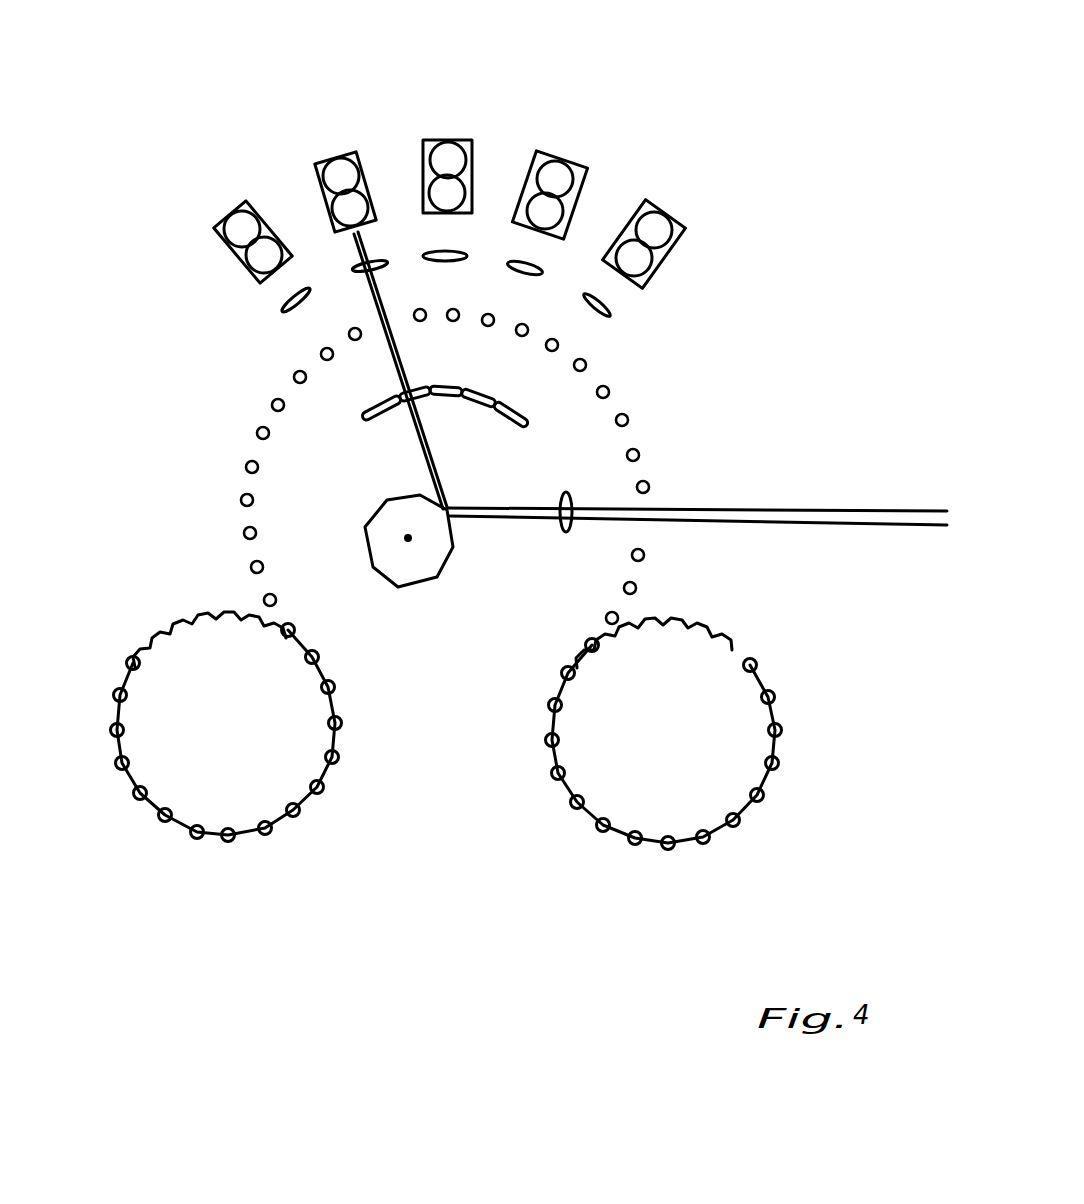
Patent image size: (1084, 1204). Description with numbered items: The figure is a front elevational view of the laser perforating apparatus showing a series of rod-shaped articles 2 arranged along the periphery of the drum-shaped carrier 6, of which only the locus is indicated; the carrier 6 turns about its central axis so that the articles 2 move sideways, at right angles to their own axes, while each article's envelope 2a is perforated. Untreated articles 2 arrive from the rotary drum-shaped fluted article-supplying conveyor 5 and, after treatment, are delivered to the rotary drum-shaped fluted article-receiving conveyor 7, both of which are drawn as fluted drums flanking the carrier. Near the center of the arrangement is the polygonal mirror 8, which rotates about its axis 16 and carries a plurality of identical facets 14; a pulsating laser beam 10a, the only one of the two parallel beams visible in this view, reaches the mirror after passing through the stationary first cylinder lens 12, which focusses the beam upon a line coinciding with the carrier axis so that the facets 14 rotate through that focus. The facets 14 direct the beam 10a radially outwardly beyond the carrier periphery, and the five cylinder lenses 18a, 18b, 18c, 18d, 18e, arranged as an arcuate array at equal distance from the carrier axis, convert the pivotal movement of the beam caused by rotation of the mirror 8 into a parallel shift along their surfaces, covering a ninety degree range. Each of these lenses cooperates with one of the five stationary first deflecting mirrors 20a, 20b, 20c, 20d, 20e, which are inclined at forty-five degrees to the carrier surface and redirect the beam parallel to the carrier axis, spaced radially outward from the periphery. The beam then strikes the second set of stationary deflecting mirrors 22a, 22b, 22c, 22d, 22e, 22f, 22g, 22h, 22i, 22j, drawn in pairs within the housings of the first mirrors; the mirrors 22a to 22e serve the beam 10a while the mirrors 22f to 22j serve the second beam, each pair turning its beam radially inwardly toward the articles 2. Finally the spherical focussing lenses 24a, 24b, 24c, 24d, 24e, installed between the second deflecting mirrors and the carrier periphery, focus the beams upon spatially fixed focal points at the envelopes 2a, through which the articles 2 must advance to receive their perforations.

The rod-shaped article 2 is at (447, 612).
The envelope 2a is at (669, 490).
The article-supplying conveyor 5 is at (778, 724).
The drum-shaped carrier 6 is at (201, 544).
The article-receiving conveyor 7 is at (132, 780).
The polygonal mirror 8 is at (435, 580).
The laser beam 10a is at (398, 352).
The first cylinder lens 12 is at (567, 492).
The facet 14 is at (447, 580).
The axis 16 is at (423, 552).
The optical component 18a is at (365, 410).
The optical component 18b is at (400, 402).
The optical component 18c is at (446, 396).
The optical component 18d is at (481, 400).
The optical component 18e is at (522, 418).
The first deflecting mirror 20a is at (202, 206).
The first deflecting mirror 20b is at (326, 137).
The first deflecting mirror 20c is at (446, 111).
The first deflecting mirror 20d is at (585, 139).
The first deflecting mirror 20e is at (710, 172).
The second deflecting mirror 22a is at (255, 258).
The second deflecting mirror 22b is at (340, 210).
The second deflecting mirror 22c is at (430, 185).
The second deflecting mirror 22d is at (538, 195).
The second deflecting mirror 22e is at (628, 240).
The second deflecting mirror 22f is at (237, 226).
The second deflecting mirror 22g is at (340, 167).
The second deflecting mirror 22h is at (455, 158).
The second deflecting mirror 22i is at (565, 178).
The second deflecting mirror 22j is at (660, 215).
The spherical focussing lens 24a is at (282, 305).
The spherical focussing lens 24b is at (352, 276).
The spherical focussing lens 24c is at (453, 250).
The spherical focussing lens 24d is at (530, 262).
The spherical focussing lens 24e is at (613, 308).